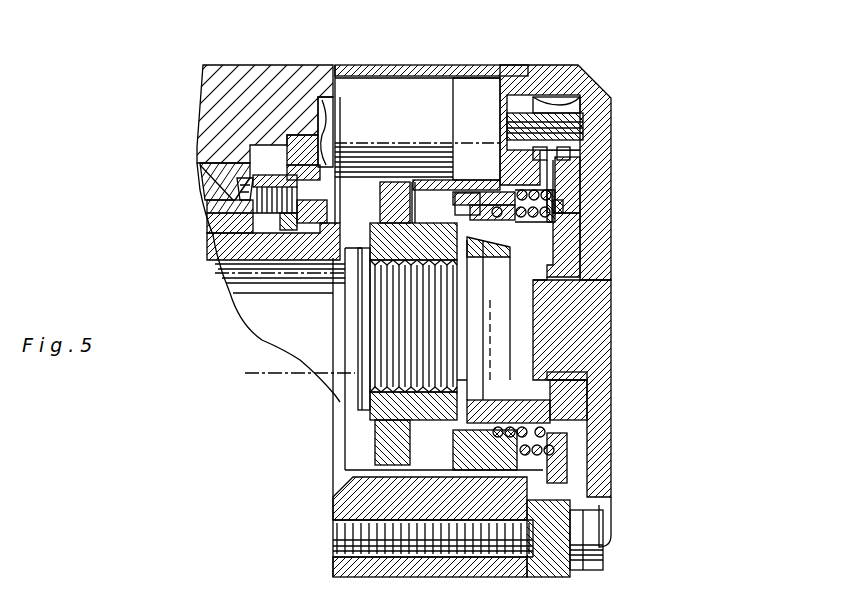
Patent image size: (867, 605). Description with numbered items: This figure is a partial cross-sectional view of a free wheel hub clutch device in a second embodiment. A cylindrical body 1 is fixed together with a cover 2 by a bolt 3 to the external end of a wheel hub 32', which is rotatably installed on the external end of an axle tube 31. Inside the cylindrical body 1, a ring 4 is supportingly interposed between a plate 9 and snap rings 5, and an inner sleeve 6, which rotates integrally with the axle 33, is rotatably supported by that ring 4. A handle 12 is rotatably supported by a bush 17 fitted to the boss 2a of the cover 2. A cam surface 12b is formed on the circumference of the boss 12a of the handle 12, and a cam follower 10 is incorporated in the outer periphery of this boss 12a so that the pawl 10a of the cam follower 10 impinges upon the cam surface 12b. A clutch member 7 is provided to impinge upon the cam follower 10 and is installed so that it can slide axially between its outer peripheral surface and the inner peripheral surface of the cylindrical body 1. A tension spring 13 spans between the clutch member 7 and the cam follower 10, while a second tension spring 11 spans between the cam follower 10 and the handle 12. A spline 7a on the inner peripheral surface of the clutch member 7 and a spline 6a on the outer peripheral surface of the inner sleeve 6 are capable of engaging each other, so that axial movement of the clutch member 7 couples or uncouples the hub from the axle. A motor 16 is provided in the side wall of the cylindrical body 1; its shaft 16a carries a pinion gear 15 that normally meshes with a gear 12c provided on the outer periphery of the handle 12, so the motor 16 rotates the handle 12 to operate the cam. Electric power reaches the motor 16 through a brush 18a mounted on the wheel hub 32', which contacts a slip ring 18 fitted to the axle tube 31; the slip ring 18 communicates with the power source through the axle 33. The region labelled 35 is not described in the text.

The cylindrical body 1 is at (348, 72).
The cover 2 is at (595, 255).
The boss 2a is at (600, 308).
The bolt 3 is at (347, 543).
The ring 4 is at (400, 185).
The snap rings 5 is at (215, 226).
The inner sleeve 6 is at (375, 292).
The spline 6a is at (423, 222).
The clutch member 7 is at (508, 112).
The spline 7a is at (465, 193).
The plate 9 is at (417, 195).
The cam follower 10 is at (552, 213).
The pawl 10a is at (557, 225).
The tension spring 11 is at (565, 185).
The handle 12 is at (553, 200).
The boss 12a is at (500, 413).
The cam surface 12b is at (500, 240).
The gear 12c is at (567, 160).
The tension spring 13 is at (570, 268).
The pinion gear 15 is at (563, 97).
The motor 16 is at (468, 88).
The shaft 16a is at (560, 152).
The bush 17 is at (578, 372).
The slip ring 18 is at (240, 203).
The brush 18a is at (298, 140).
The axle tube 31 is at (270, 237).
The wheel hub 32' is at (256, 155).
The axle 33 is at (360, 257).
The seal 35 is at (217, 187).